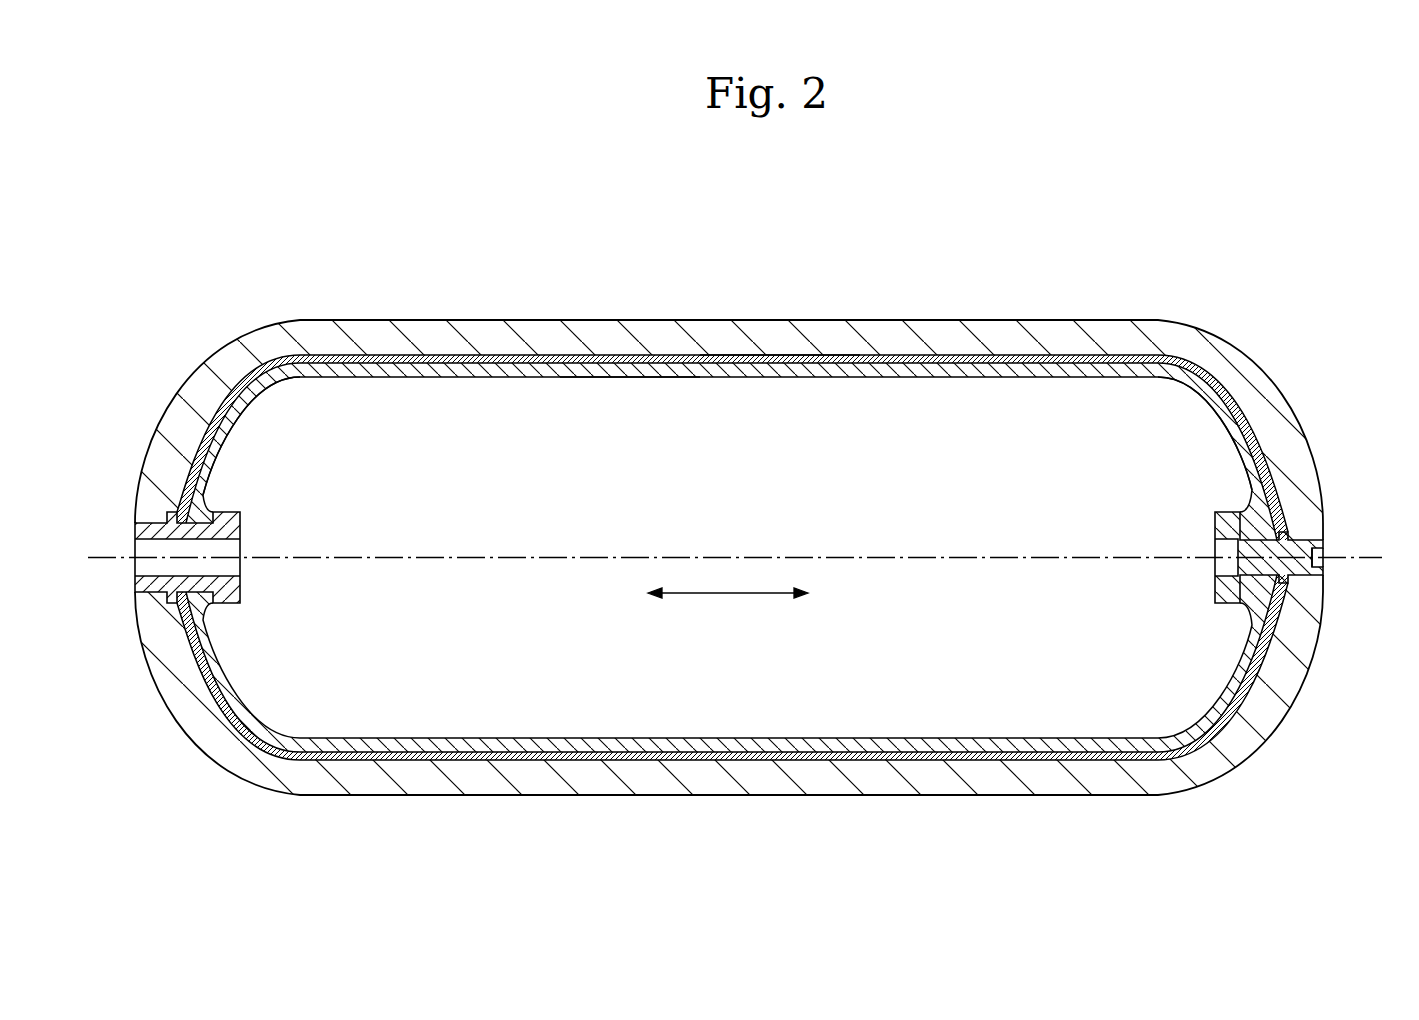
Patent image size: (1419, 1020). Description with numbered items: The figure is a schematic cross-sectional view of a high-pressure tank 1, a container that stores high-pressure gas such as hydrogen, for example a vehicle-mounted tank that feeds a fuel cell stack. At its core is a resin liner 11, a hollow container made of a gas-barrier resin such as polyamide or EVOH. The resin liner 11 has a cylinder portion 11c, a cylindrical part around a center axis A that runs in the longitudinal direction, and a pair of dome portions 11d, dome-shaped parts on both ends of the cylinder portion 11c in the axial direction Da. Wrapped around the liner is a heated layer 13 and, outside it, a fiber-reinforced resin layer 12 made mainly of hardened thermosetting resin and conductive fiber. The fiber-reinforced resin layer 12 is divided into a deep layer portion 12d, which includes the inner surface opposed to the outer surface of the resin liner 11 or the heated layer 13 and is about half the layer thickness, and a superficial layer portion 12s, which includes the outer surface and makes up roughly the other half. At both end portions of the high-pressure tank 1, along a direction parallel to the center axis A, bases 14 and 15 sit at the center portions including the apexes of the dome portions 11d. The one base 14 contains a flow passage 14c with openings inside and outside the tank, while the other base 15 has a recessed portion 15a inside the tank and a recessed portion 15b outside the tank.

The high-pressure tank 1 is at (1228, 280).
The resin liner 11 is at (862, 740).
The cylinder portion 11c is at (630, 380).
The dome portions 11d is at (233, 452).
The fiber-reinforced resin layer 12 is at (862, 232).
The superficial layer portion 12s is at (768, 328).
The deep layer portion 12d is at (770, 348).
The heated layer 13 is at (663, 357).
The base 14 is at (150, 522).
The flow passage 14c is at (205, 540).
The base 15 is at (1297, 568).
The recessed portion 15a is at (1223, 550).
The recessed portion 15b is at (1323, 550).
The center axis A is at (749, 559).
The axial direction Da is at (728, 606).